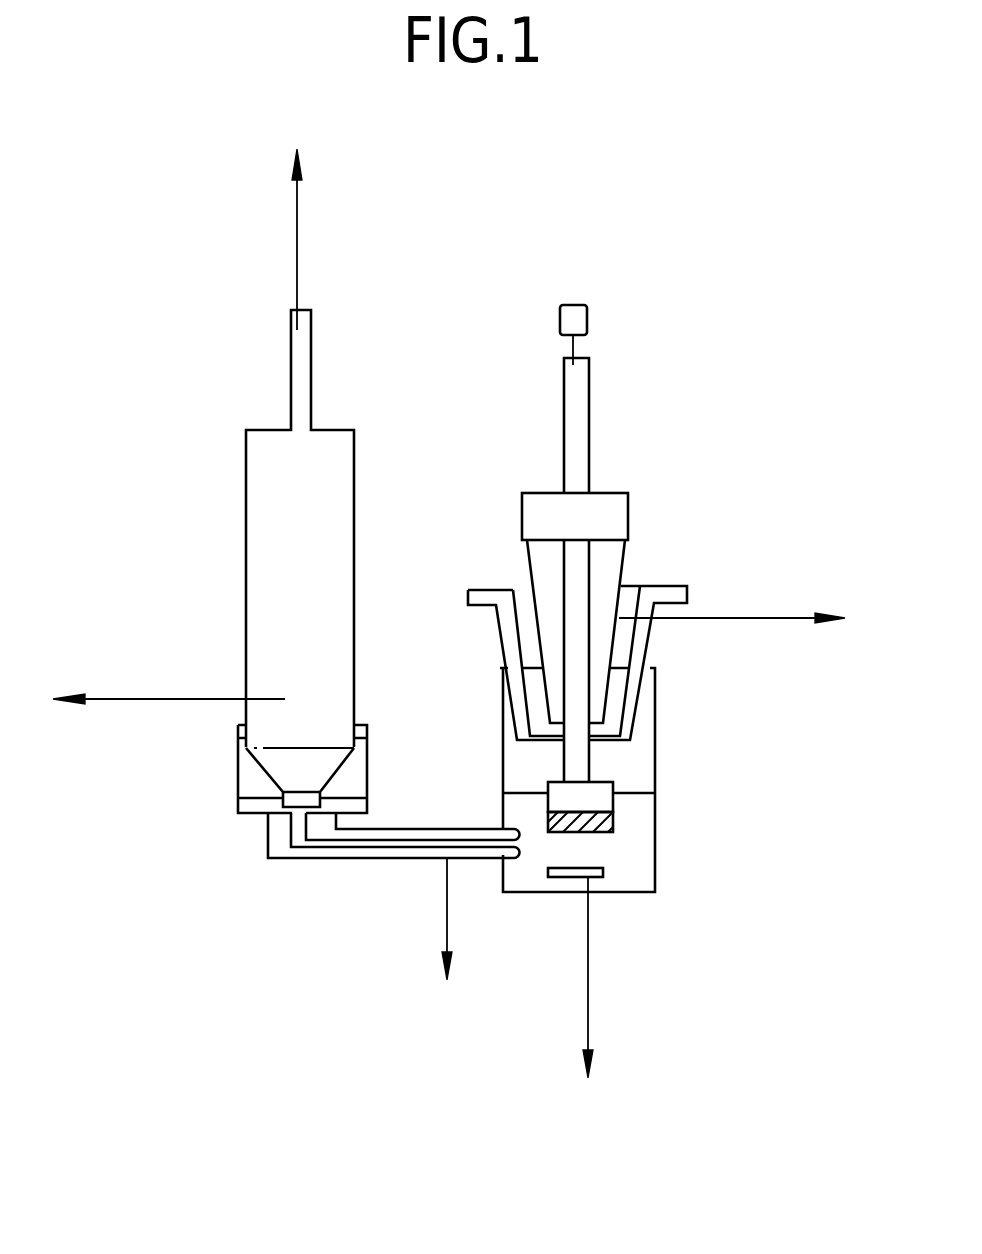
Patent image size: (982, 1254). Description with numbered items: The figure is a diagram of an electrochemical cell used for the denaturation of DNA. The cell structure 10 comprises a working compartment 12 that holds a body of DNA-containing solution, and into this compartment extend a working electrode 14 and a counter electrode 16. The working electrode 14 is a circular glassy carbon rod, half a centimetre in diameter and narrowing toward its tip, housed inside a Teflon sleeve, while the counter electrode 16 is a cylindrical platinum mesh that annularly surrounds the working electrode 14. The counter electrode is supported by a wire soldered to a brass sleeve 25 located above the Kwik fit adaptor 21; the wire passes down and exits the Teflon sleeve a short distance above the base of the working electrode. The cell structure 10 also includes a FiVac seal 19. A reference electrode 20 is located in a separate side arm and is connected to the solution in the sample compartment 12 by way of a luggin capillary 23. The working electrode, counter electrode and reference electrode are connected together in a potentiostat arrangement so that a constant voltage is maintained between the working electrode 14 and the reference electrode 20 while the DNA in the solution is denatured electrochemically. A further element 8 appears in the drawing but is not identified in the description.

The product outlet 8 is at (599, 977).
The cell structure 10 is at (193, 560).
The working compartment 12 is at (633, 875).
The working electrode 14 is at (602, 792).
The counter electrode 16 is at (610, 830).
The FiVac seal 19 is at (644, 682).
The reference electrode 20 is at (168, 683).
The Kwik fit adaptor 21 is at (732, 597).
The luggin capillary 23 is at (447, 939).
The brass sleeve 25 is at (583, 380).